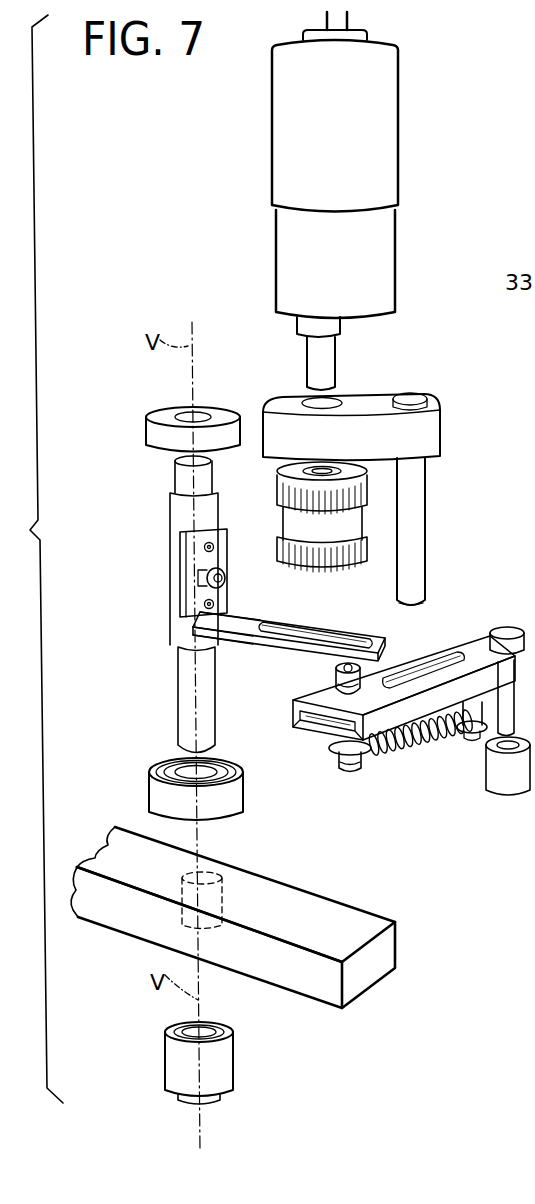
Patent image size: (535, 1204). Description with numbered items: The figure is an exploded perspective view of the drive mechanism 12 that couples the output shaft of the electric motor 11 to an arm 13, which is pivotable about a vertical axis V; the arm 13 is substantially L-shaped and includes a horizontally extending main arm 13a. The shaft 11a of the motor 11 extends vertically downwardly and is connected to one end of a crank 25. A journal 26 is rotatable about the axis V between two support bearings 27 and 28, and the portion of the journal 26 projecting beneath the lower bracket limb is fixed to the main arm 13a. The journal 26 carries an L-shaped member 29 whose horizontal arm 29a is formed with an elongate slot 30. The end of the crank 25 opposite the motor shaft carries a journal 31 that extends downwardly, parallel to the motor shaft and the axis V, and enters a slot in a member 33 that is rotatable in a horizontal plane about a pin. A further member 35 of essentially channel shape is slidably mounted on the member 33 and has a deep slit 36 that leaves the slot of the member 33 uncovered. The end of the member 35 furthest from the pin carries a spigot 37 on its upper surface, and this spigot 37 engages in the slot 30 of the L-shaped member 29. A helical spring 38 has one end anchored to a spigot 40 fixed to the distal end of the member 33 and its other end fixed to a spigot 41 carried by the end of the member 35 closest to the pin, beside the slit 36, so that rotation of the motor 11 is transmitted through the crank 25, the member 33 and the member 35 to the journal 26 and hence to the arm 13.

The electric motor 11 is at (280, 120).
The motor shaft 11a is at (310, 359).
The drive unit 12 is at (150, 596).
The arm 13 is at (81, 958).
The main arm 13a is at (92, 905).
The crank 25 is at (368, 397).
The journal 26 is at (183, 681).
The support bearing 27 is at (150, 428).
The support bearing 28 is at (150, 779).
The L-shaped member 29 is at (200, 556).
The horizontal arm 29a is at (252, 620).
The elongate slot 30 is at (330, 635).
The journal 31 is at (424, 555).
The rotatable member 33 is at (476, 650).
The channel-shaped member 35 is at (375, 740).
The slit 36 is at (408, 672).
The spigot 37 is at (335, 683).
The helical spring 38 is at (415, 750).
The spigot 40 is at (338, 768).
The spigot 41 is at (465, 740).